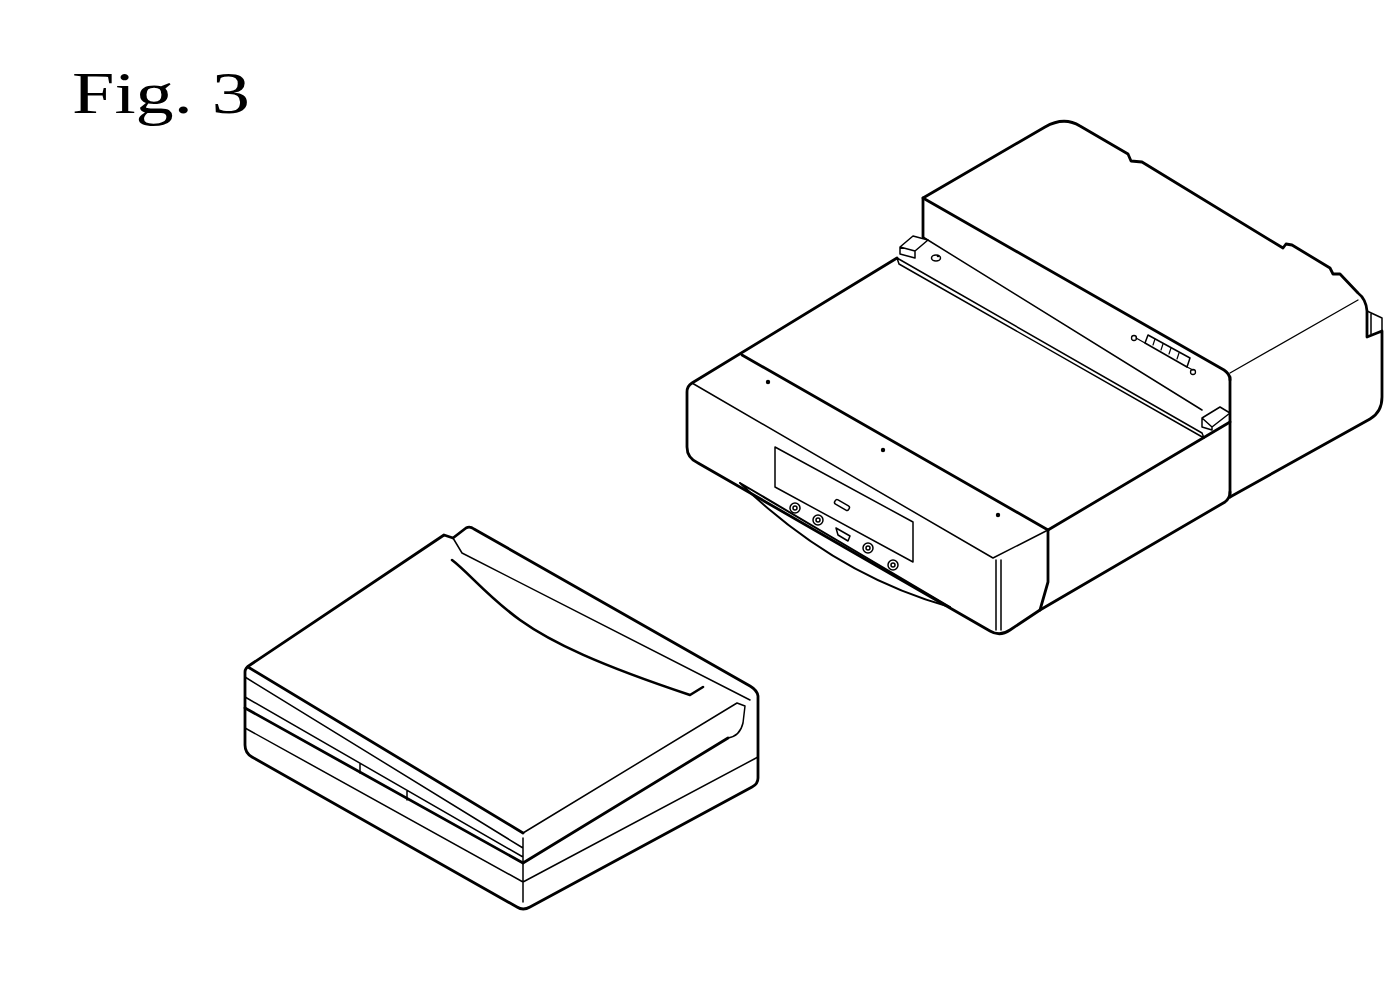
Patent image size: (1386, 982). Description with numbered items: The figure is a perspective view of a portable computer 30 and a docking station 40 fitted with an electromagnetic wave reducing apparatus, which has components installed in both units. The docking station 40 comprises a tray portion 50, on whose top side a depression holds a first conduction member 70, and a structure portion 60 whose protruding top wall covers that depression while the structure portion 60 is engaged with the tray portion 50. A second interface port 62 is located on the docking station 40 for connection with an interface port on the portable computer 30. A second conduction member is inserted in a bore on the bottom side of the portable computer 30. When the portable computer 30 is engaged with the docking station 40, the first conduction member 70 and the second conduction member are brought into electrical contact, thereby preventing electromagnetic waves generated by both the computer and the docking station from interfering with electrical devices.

The portable computer 30 is at (319, 580).
The docking station 40 is at (798, 289).
The tray portion 50 is at (958, 408).
The structure portion 60 is at (1152, 292).
The second interface port 62 is at (1143, 334).
The first conduction member 70 is at (941, 256).